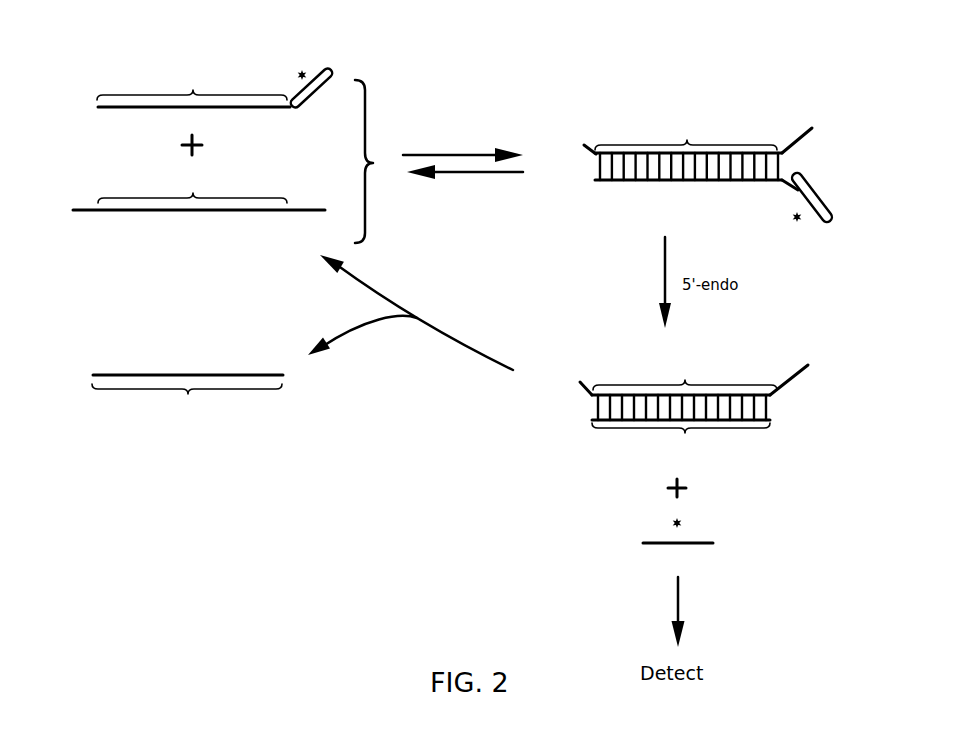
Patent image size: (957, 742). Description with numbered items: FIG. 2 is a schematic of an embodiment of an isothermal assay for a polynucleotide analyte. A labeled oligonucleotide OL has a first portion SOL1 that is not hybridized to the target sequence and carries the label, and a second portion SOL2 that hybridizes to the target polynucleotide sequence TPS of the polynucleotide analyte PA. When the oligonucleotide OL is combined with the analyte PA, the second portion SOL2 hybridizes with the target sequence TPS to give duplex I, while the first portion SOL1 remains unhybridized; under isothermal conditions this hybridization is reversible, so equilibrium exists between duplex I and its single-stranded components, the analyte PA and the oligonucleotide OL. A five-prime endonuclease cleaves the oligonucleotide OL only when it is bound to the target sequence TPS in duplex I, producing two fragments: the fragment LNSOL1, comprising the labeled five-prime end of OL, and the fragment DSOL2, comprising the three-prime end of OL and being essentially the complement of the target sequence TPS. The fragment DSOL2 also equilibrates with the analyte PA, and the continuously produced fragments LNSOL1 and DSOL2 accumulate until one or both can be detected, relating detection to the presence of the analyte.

The second portion or sequence SOL2 is at (193, 85).
The first portion or sequence SOL1 is at (580, 146).
The oligonucleotide OL' OL is at (420, 151).
The target polynucleotide sequence TPS' TPS is at (450, 251).
The polynucleotide analyte PA' PA is at (443, 255).
The duplex I' I is at (689, 190).
The fragment DSOL2 is at (435, 413).
The fragment LNSOL1 is at (686, 547).